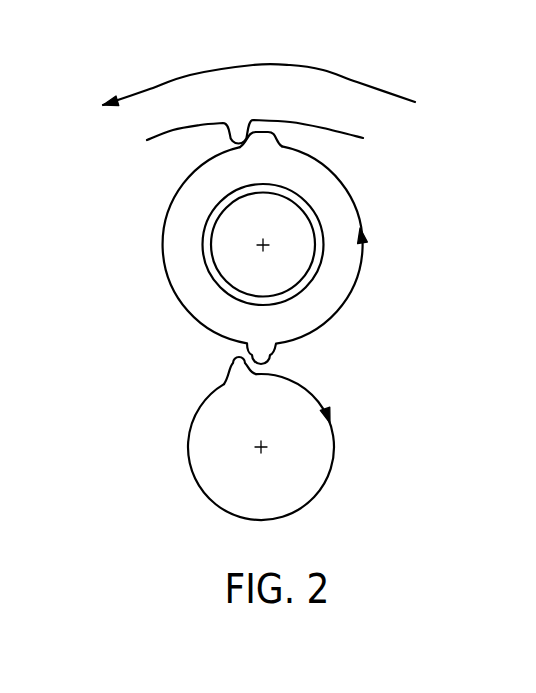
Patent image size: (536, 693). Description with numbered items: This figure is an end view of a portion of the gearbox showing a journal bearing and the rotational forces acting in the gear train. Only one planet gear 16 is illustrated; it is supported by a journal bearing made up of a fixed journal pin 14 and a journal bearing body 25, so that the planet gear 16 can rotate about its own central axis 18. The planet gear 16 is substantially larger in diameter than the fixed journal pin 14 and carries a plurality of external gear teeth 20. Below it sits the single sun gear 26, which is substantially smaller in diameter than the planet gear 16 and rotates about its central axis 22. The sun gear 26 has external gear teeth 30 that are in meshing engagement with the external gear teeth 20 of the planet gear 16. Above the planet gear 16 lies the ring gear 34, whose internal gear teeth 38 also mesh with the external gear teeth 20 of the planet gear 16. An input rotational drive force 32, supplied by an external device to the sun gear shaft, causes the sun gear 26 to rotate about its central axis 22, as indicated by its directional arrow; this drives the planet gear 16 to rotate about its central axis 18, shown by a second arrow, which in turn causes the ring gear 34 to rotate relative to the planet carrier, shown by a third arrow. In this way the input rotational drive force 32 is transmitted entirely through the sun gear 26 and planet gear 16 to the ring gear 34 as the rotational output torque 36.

The fixed journal pin 14 is at (303, 252).
The planet gear 16 is at (352, 193).
The central axis 18 is at (258, 245).
The external gear teeth 20 is at (258, 130).
The central axis 22 is at (257, 447).
The journal bearing body 25 is at (188, 212).
The sun gear 26 is at (257, 353).
The external gear teeth 30 is at (238, 371).
The input rotational drive force 32 is at (313, 390).
The ring gear 34 is at (213, 95).
The rotational output torque 36 is at (147, 91).
The internal gear teeth 38 is at (239, 130).